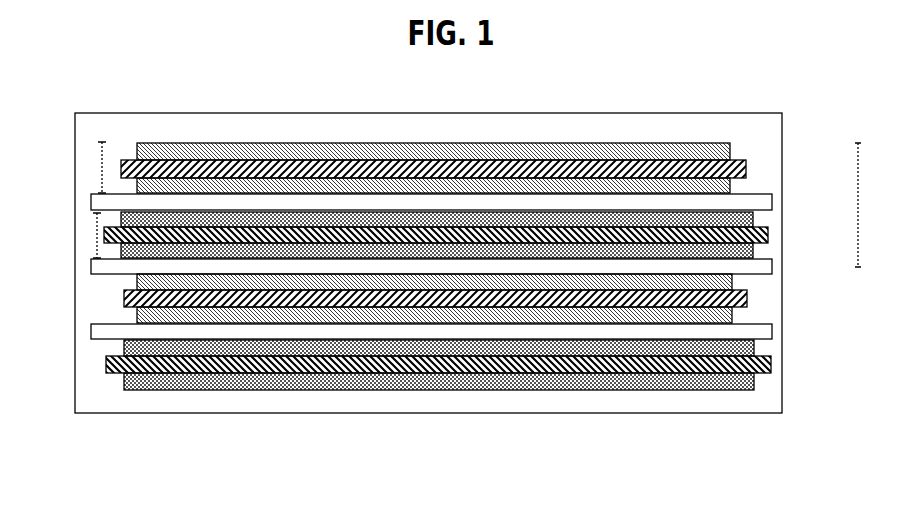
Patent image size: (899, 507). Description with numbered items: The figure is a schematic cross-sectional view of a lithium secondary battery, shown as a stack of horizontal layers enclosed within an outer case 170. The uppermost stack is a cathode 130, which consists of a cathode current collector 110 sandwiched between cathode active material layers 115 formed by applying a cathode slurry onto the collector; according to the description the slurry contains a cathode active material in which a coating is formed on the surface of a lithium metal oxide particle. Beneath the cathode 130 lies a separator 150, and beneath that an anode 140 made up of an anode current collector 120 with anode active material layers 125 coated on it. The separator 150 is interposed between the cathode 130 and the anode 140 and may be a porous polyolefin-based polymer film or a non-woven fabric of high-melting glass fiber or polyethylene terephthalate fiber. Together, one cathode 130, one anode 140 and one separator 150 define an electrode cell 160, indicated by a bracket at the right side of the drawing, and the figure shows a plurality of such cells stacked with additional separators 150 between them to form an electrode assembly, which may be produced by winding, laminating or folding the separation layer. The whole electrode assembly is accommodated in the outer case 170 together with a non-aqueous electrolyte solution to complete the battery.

The cathode current collector 110 is at (746, 167).
The cathode active material layer 115 is at (730, 148).
The anode current collector 120 is at (768, 234).
The anode active material layer 125 is at (753, 219).
The cathode 130 is at (99, 160).
The anode 140 is at (94, 247).
The separator 150 is at (91, 202).
The electrode cell 160 is at (858, 206).
The outer case 170 is at (197, 413).